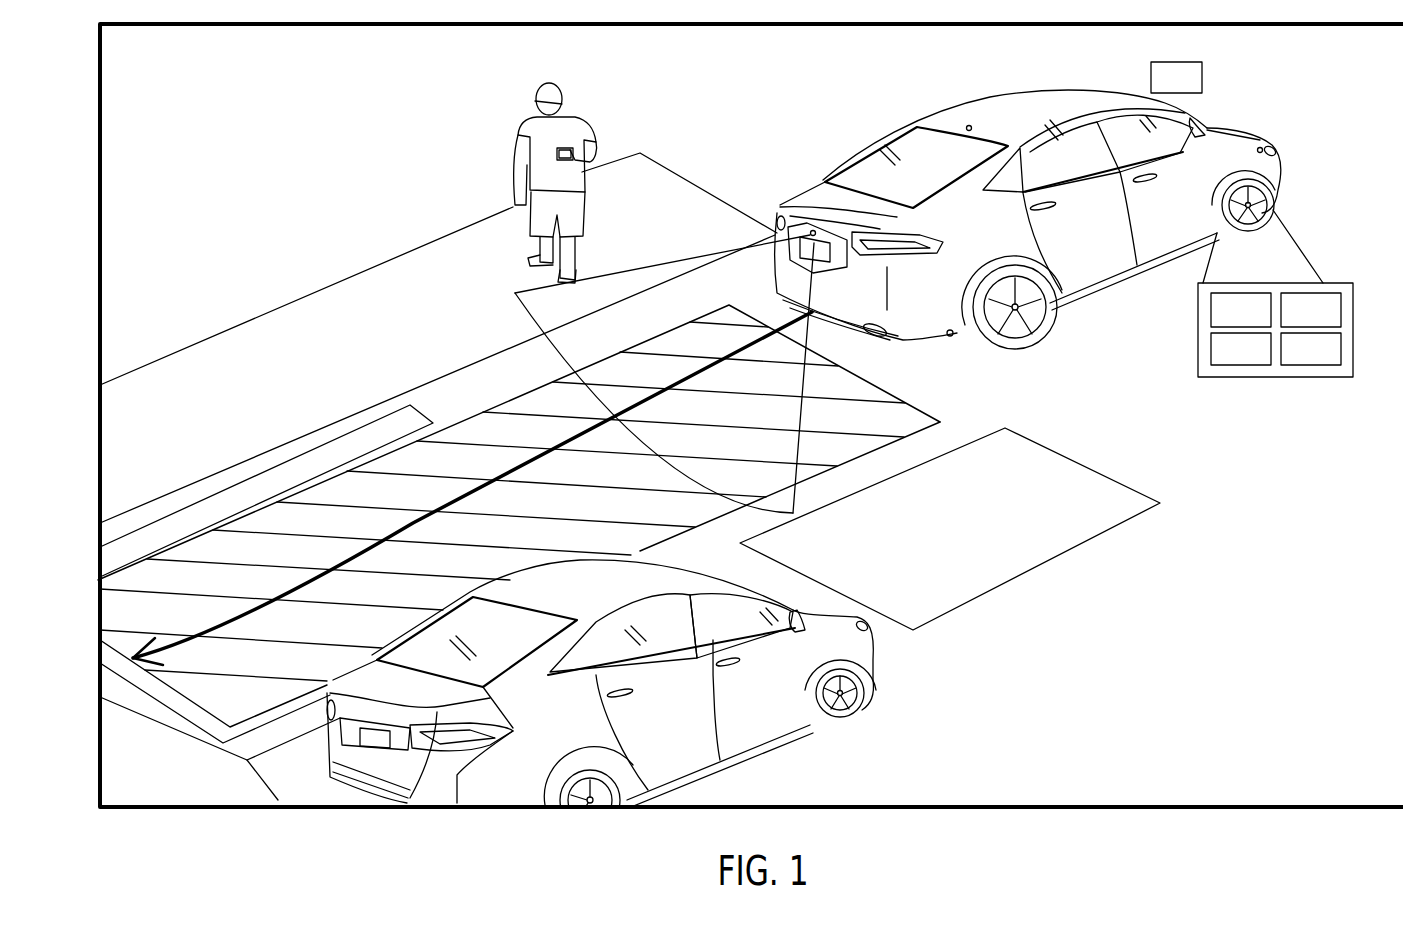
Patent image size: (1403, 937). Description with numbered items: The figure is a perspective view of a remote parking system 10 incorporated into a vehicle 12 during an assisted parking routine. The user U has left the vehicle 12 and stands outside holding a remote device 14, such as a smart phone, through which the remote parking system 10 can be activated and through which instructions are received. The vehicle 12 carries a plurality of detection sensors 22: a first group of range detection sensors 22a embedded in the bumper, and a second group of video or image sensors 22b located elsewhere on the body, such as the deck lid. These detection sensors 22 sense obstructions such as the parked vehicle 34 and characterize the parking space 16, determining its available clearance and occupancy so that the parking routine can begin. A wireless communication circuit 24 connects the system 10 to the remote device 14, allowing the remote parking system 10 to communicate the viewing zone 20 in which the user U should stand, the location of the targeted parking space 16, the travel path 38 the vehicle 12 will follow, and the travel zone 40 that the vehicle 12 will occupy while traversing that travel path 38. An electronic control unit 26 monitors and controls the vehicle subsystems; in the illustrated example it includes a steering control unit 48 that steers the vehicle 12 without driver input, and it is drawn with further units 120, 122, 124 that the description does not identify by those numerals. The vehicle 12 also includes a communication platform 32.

The remote parking system 10 is at (1247, 91).
The vehicle 12 is at (1033, 115).
The remote device 14 is at (569, 148).
The parking space 16 is at (217, 582).
The viewing zone 20 is at (423, 335).
The detection sensors 22 is at (959, 331).
The range detection sensors 22a is at (1262, 151).
The video or image sensors 22b is at (813, 233).
The wireless communication circuit 24 is at (967, 126).
The electronic control unit 26 is at (1256, 320).
The communication platform 32 is at (1191, 113).
The parked vehicle 34 is at (762, 697).
The travel path 38 is at (413, 518).
The travel zone 40 is at (540, 514).
The steering control unit 48 is at (1229, 322).
The processor 120 is at (1293, 322).
The memory 122 is at (1223, 361).
The input/output module 124 is at (1293, 361).
The user U is at (512, 126).